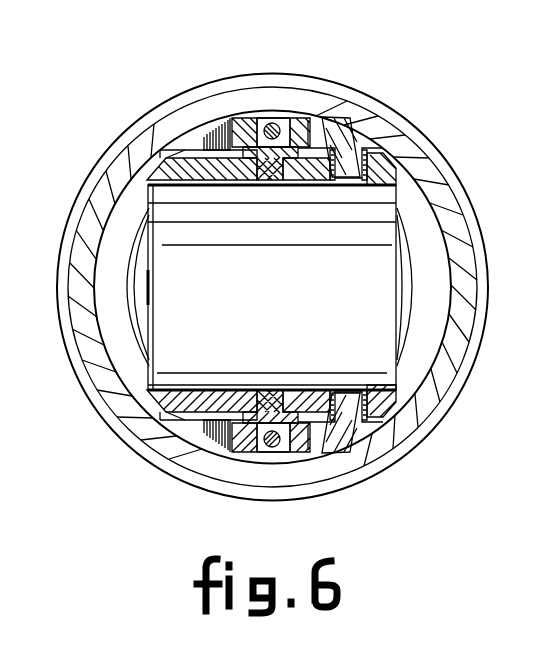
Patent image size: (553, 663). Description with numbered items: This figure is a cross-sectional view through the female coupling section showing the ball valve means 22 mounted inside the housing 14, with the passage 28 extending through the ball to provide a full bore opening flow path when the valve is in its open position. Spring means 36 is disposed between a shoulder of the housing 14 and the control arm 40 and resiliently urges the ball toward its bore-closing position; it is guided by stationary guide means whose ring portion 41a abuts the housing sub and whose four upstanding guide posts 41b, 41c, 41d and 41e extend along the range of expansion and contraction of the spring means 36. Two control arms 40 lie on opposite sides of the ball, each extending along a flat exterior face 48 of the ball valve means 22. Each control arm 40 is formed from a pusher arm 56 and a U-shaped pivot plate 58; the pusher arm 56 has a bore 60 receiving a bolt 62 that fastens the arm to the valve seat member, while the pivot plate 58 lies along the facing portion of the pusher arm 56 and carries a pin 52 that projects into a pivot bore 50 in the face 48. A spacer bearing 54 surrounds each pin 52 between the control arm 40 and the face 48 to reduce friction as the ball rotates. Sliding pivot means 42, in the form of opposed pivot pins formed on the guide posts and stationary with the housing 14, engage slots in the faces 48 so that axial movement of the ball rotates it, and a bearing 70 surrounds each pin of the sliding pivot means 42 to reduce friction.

The housing 14 is at (484, 232).
The ball valve means 22 is at (398, 295).
The passage 28 is at (287, 297).
The spring means 36 is at (402, 263).
The control arm 40 is at (235, 109).
The ring portion 41a is at (120, 213).
The guide post 41b is at (193, 137).
The guide post 41c is at (357, 137).
The guide post 41d is at (368, 445).
The guide post 41e is at (193, 440).
The sliding pivot means 42 is at (352, 183).
The flat exterior face 48 is at (185, 152).
The pivot bore 50 is at (274, 183).
The pin 52 is at (270, 182).
The spacer bearing 54 is at (222, 182).
The pusher arm 56 is at (298, 118).
The pivot plate 58 is at (311, 128).
The bore 60 is at (266, 118).
The bolt 62 is at (266, 124).
The bearing 70 is at (367, 157).